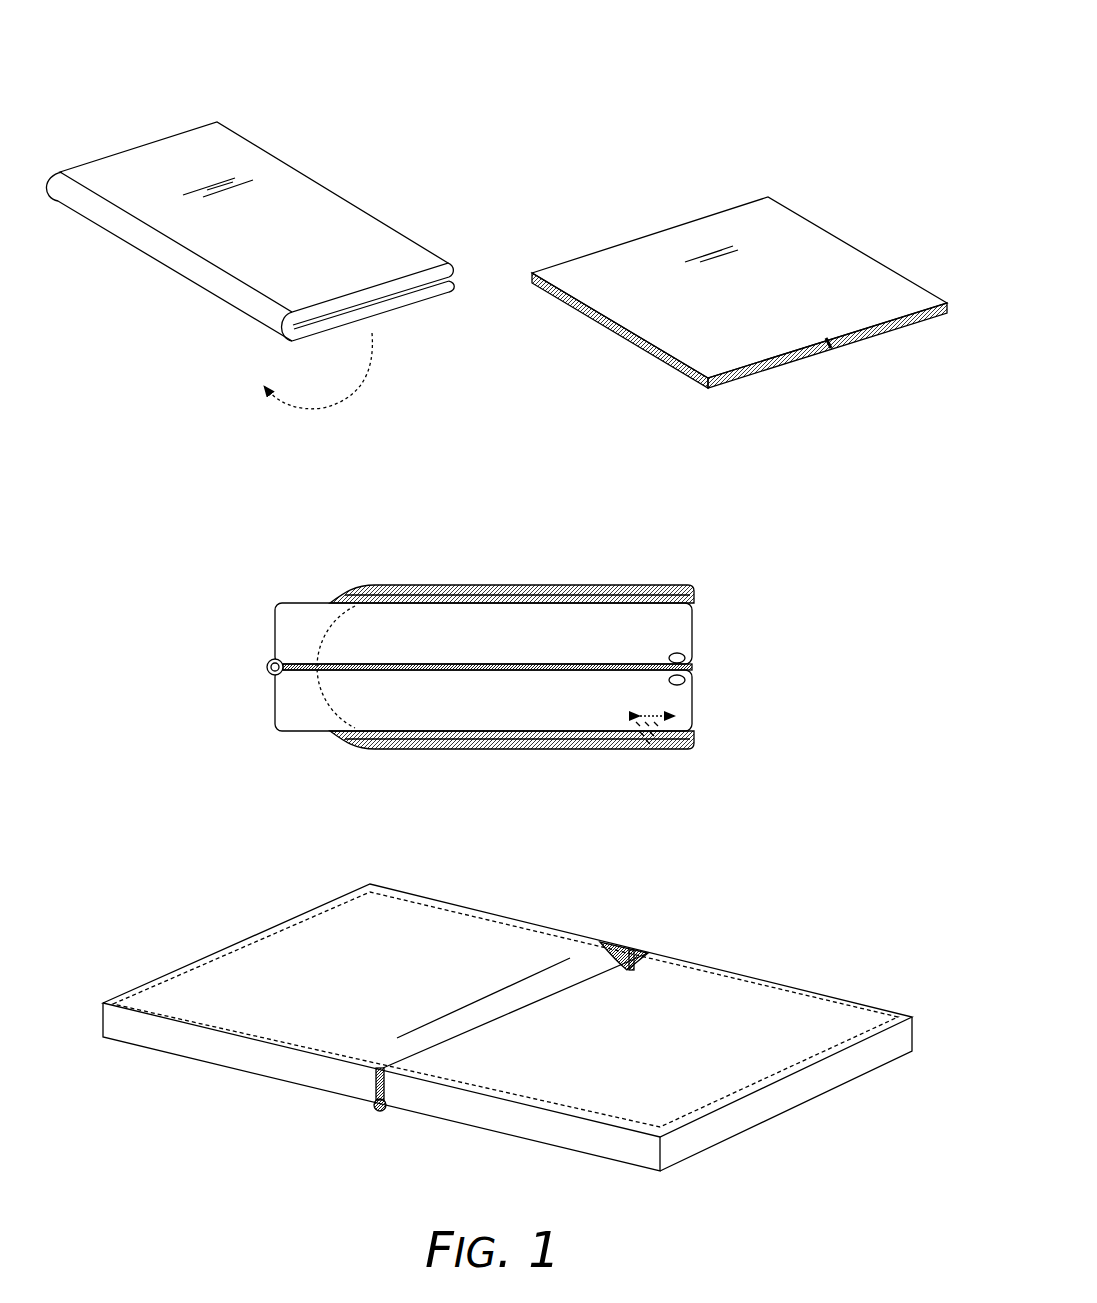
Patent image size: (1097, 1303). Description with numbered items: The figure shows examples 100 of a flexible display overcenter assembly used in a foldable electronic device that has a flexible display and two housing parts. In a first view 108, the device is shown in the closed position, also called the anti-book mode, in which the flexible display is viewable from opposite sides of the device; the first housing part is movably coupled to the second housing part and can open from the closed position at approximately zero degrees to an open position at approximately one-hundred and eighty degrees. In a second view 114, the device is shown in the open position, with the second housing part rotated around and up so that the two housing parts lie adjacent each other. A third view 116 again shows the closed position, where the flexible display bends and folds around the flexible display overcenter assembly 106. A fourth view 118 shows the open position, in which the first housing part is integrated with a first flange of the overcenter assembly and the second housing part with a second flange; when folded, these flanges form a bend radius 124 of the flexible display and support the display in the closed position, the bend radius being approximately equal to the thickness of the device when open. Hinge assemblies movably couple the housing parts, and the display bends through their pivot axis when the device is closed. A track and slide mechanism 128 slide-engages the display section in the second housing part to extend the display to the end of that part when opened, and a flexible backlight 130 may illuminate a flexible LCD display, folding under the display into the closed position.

The examples of a flexible display overcenter assembly 100 is at (739, 197).
The flexible display overcenter assembly 106 is at (175, 260).
The first view 108 is at (282, 233).
The second view 114 is at (739, 261).
The third view 116 is at (480, 647).
The fourth view 118 is at (507, 1019).
The bend radius 124 is at (395, 710).
The track and slide mechanism 128 is at (678, 740).
The flexible backlight 130 is at (472, 598).